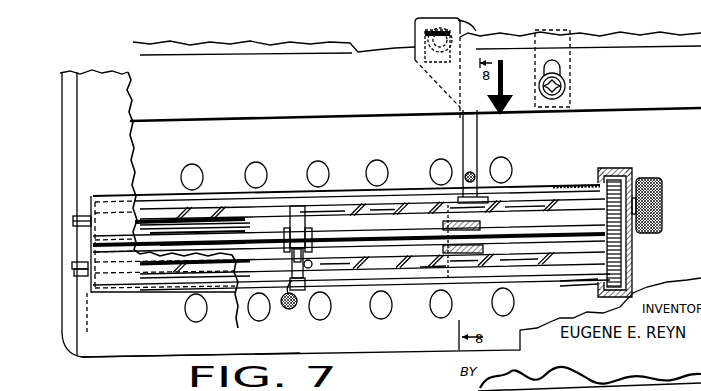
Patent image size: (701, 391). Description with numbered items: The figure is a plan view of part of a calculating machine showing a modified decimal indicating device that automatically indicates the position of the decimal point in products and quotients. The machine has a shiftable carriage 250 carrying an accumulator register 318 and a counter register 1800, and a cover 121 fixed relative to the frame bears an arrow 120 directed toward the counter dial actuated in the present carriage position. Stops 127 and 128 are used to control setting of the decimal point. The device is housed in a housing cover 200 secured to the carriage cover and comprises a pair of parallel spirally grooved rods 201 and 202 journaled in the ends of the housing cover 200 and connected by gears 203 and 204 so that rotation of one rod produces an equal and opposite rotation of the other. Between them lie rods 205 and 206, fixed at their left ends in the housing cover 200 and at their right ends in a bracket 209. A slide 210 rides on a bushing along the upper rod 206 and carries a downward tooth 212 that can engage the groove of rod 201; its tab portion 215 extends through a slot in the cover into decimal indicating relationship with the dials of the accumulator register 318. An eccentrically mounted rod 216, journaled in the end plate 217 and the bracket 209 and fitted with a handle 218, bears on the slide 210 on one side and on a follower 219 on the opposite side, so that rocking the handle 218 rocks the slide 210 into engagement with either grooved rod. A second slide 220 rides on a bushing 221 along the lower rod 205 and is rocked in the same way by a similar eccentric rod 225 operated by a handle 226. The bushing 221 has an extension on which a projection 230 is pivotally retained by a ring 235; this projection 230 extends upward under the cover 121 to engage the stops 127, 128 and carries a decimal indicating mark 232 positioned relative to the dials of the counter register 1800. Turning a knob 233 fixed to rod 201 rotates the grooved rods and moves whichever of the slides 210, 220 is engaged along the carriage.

The cover 121 is at (230, 30).
The stop 128 is at (456, 21).
The arrow 120 is at (503, 60).
The stop 127 is at (568, 36).
The counter register 1800 is at (173, 178).
The eccentrically mounted rod 225 is at (208, 209).
The tooth 212 is at (300, 205).
The slide 210 is at (304, 206).
The rod 206 is at (243, 241).
The spirally grooved rod 201 is at (340, 205).
The rod 205 is at (378, 236).
The second slide 220 is at (460, 197).
The projection 230 is at (480, 141).
The decimal indicating mark 232 is at (479, 178).
The ring 235 is at (522, 203).
The gear 203 is at (630, 169).
The knob 233 is at (663, 199).
The handle 226 is at (75, 218).
The handle 218 is at (72, 273).
The follower 219 is at (232, 268).
The housing cover 200 is at (150, 288).
The end plate 217 is at (98, 316).
The accumulator register 318 is at (180, 318).
The eccentrically mounted rod 216 is at (256, 282).
The tab portion 215 is at (292, 309).
The spirally grooved rod 202 is at (360, 284).
The bushing 221 is at (430, 270).
The bracket 209 is at (578, 271).
The gear 204 is at (631, 274).
The carriage 250 is at (125, 356).